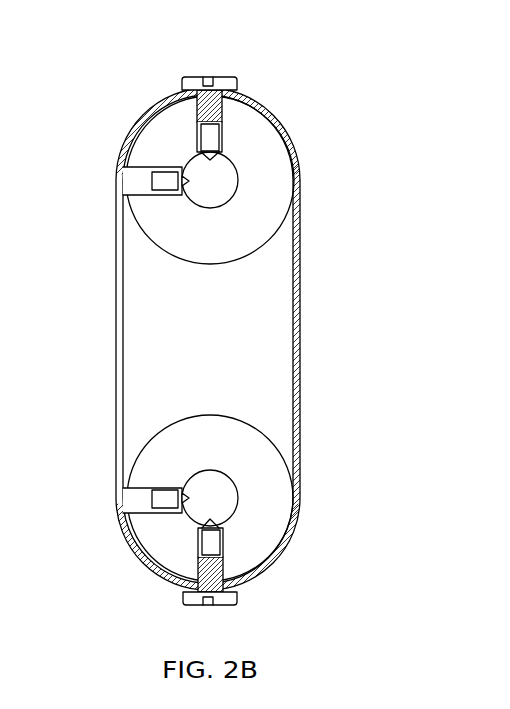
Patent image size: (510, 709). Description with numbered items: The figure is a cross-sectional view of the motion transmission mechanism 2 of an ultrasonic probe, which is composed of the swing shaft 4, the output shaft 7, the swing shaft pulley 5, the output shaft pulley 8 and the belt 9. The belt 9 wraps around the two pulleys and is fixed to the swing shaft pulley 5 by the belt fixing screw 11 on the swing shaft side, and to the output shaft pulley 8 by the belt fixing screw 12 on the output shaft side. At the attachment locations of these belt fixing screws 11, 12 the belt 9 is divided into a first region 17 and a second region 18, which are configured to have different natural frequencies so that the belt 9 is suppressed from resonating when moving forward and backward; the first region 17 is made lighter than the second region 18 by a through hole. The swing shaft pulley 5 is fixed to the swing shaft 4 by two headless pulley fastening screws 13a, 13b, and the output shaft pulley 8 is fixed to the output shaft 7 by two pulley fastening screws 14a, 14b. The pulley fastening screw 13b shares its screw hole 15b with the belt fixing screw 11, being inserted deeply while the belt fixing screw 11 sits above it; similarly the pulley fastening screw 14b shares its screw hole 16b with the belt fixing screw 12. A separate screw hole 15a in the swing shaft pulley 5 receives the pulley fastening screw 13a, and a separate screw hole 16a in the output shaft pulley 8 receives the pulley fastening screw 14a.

The motion transmission mechanism 2 is at (348, 59).
The swing shaft 4 is at (217, 181).
The swing shaft pulley 5 is at (273, 158).
The output shaft 7 is at (220, 493).
The output shaft pulley 8 is at (253, 460).
The belt 9 is at (368, 267).
The belt fixing screw 11 is at (222, 82).
The belt fixing screw 12 is at (197, 603).
The pulley fastening screw 13a is at (140, 177).
The pulley fastening screw 13b is at (207, 138).
The pulley fastening screw 14a is at (140, 495).
The pulley fastening screw 14b is at (213, 545).
The screw hole 15a is at (170, 178).
The screw hole 15b is at (223, 108).
The screw hole 16a is at (170, 493).
The screw hole 16b is at (228, 567).
The first region 17 is at (124, 359).
The second region 18 is at (300, 299).